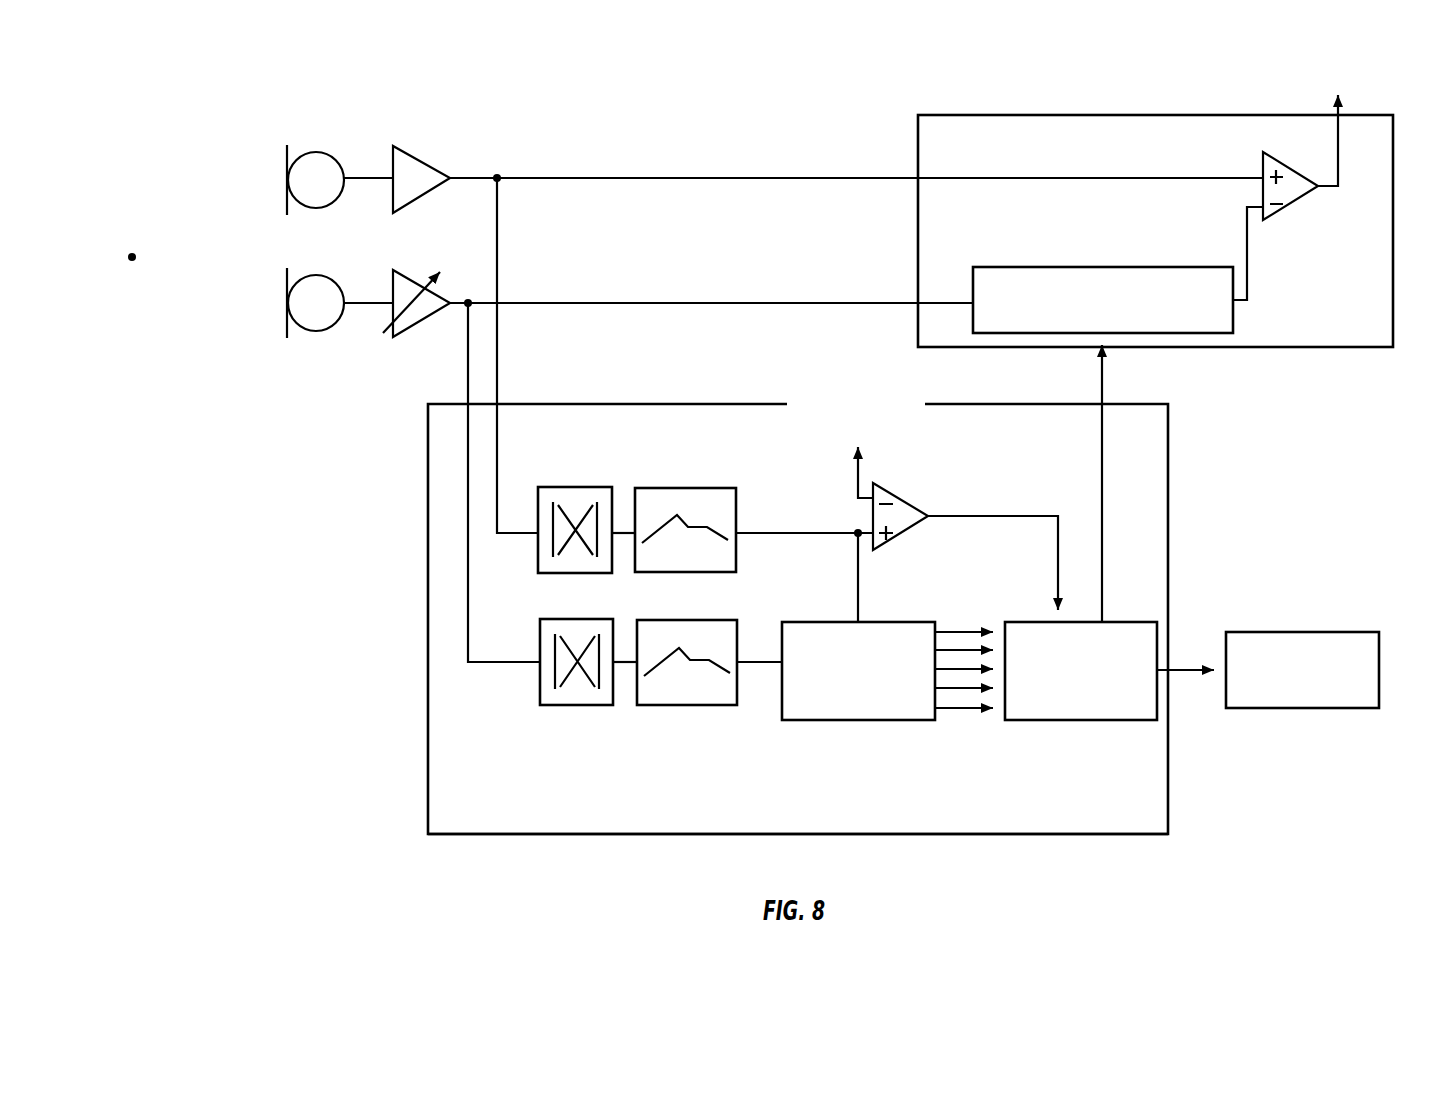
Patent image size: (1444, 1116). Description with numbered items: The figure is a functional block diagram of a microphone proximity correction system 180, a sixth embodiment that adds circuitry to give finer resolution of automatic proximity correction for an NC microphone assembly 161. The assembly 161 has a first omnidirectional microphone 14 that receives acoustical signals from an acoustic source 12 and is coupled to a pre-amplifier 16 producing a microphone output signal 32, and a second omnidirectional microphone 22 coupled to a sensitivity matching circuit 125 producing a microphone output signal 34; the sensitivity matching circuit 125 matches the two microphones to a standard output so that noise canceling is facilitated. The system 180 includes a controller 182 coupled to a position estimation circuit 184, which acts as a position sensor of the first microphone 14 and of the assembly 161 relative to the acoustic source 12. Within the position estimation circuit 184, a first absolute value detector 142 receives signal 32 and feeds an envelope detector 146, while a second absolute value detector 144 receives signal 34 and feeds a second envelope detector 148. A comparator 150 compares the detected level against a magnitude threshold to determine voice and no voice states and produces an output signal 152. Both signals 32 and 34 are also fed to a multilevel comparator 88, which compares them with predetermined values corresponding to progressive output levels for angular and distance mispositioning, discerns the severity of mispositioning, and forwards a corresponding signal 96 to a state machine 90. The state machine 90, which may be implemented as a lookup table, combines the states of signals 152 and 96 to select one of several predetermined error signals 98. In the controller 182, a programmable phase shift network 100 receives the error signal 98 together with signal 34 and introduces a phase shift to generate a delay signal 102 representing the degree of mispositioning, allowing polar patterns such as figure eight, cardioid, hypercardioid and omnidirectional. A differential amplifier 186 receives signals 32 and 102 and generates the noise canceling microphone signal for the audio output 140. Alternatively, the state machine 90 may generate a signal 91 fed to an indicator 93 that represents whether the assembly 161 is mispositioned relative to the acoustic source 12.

The first microphone 14 is at (322, 152).
The pre-amplifier 16 is at (420, 153).
The acoustic source 12 is at (132, 257).
The second microphone 22 is at (316, 332).
The sensitivity matching circuit 125 is at (385, 402).
The microphone output signal 32 is at (470, 167).
The microphone output signal 34 is at (575, 293).
The NC microphone assembly 161 is at (256, 512).
The position estimation circuit 184 is at (1100, 834).
The microphone proximity correction system 180 is at (312, 740).
The first absolute value detector 142 is at (590, 487).
The second absolute value detector 144 is at (540, 688).
The envelope detector 146 is at (718, 488).
The second envelope detector 148 is at (718, 620).
The comparator 150 is at (915, 503).
The output signal 152 is at (1023, 516).
The error signal 98 is at (1105, 393).
The multilevel comparator 88 is at (813, 722).
The signal 96 is at (960, 742).
The state machine 90 is at (1160, 712).
The signal 91 is at (1177, 658).
The indicator 93 is at (1308, 710).
The output 140 is at (1400, 116).
The programmable phase shift network 100 is at (1237, 328).
The delay signal 102 is at (1247, 223).
The differential amplifier 186 is at (1268, 152).
The controller 182 is at (1263, 115).